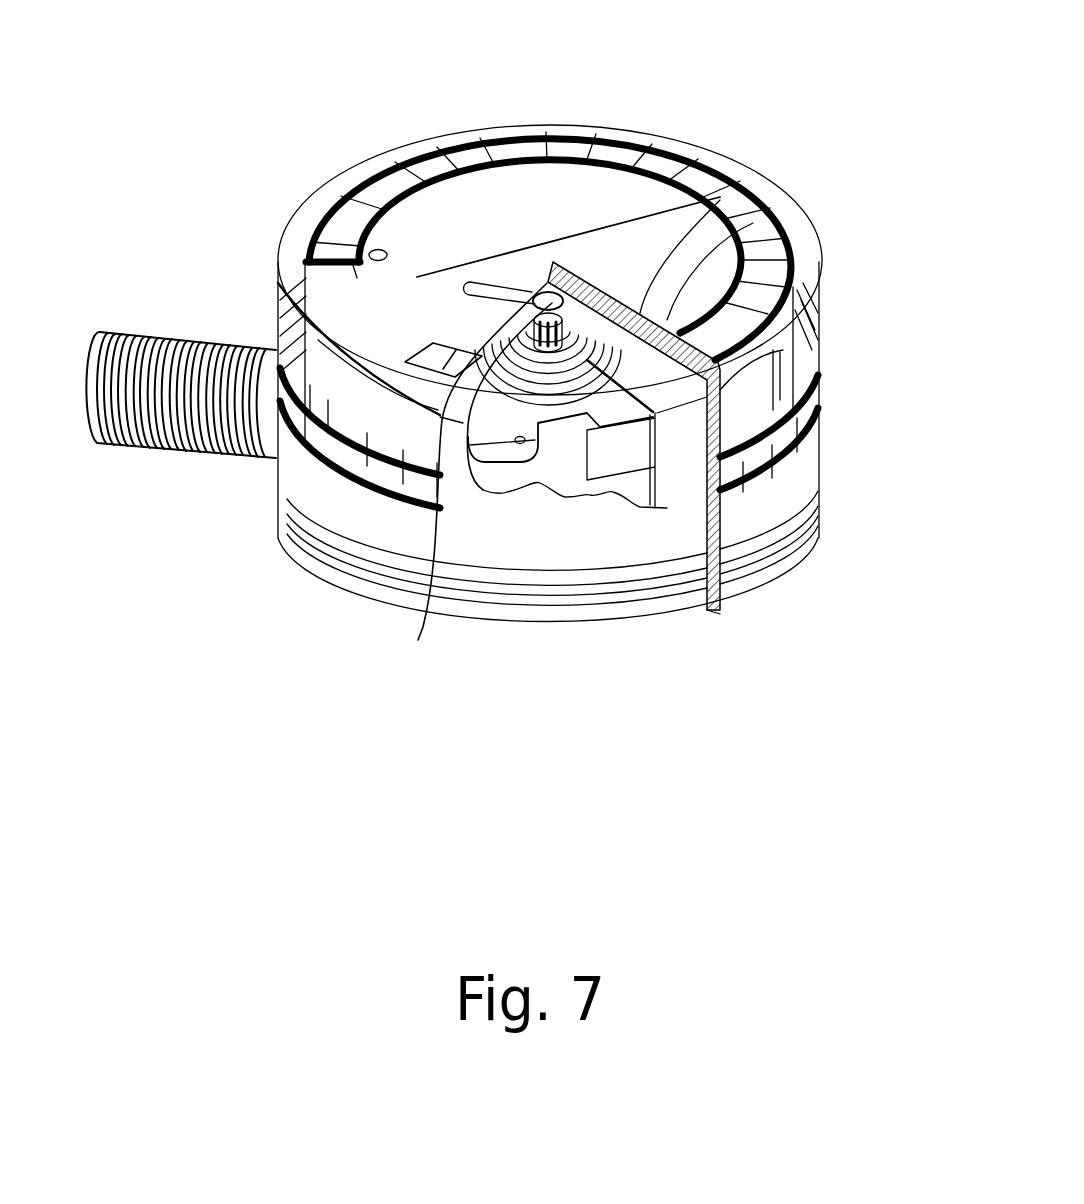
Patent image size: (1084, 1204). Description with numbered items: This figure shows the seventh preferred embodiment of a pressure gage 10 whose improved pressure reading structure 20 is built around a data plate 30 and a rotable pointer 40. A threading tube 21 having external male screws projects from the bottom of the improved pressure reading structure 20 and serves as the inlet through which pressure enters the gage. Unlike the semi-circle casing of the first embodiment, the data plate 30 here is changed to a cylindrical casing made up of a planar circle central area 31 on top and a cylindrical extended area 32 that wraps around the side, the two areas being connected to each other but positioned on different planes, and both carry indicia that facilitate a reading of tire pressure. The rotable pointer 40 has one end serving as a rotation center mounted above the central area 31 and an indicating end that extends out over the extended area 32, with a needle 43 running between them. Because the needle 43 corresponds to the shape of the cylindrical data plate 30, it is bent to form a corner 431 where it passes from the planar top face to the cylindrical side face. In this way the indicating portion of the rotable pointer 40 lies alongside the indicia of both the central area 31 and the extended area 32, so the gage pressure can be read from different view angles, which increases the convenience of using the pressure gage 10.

The pressure gage 10 is at (287, 650).
The improved pressure reading structure 20 is at (593, 77).
The threading tube 21 is at (145, 332).
The data plate 30 is at (482, 212).
The central area 31 is at (335, 262).
The extended area 32 is at (293, 547).
The rotable pointer 40 is at (700, 212).
The needle 43 is at (780, 225).
The corner 431 is at (795, 360).